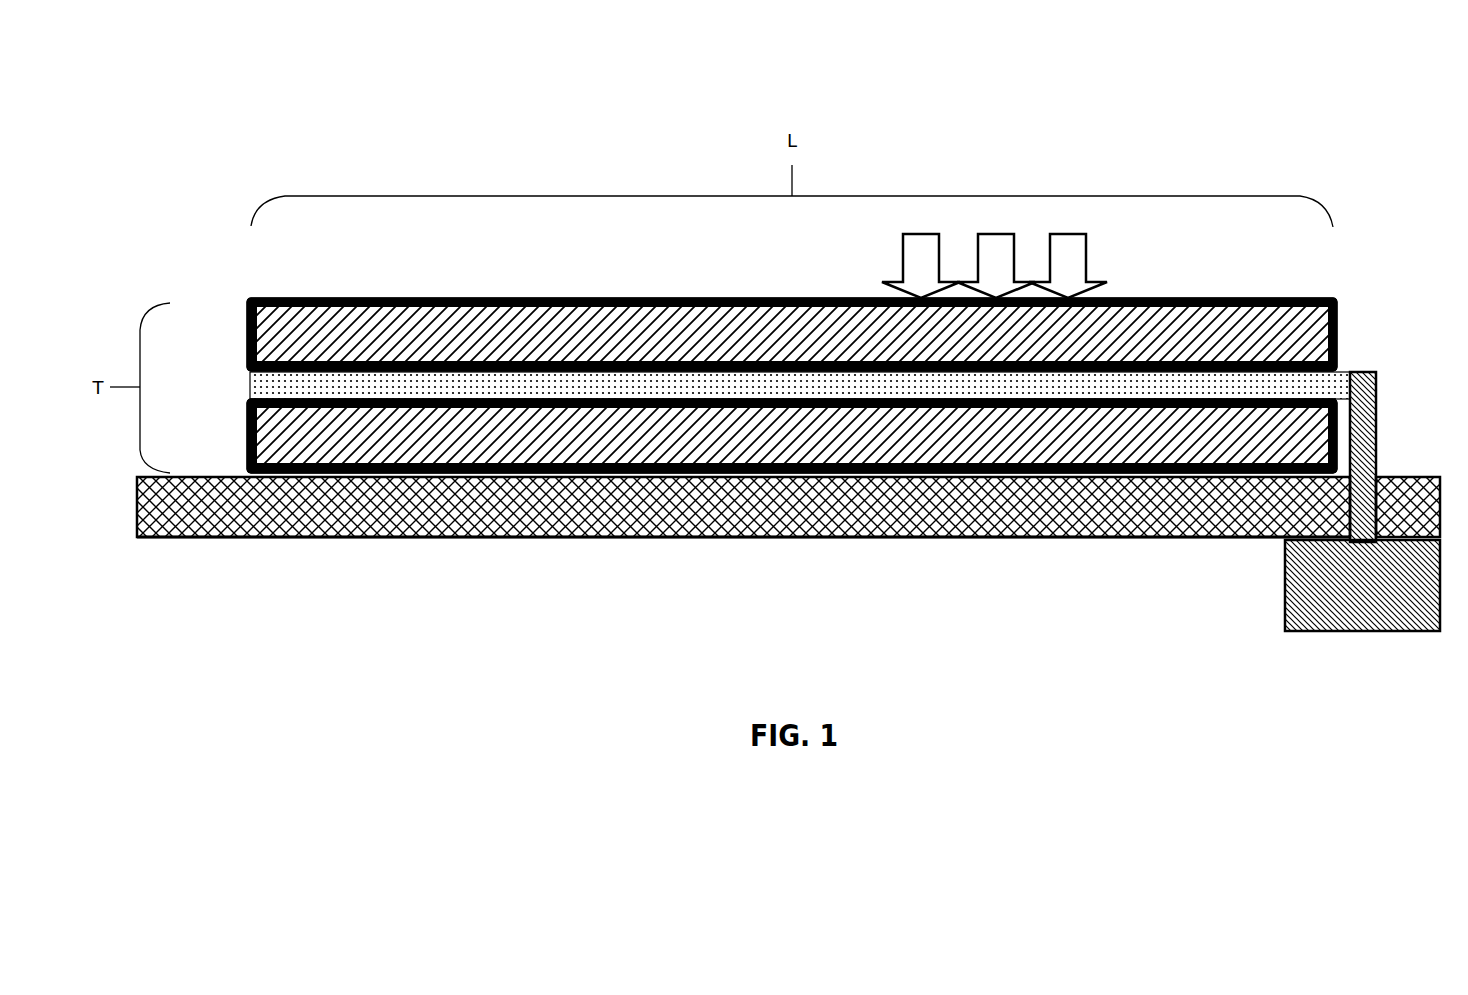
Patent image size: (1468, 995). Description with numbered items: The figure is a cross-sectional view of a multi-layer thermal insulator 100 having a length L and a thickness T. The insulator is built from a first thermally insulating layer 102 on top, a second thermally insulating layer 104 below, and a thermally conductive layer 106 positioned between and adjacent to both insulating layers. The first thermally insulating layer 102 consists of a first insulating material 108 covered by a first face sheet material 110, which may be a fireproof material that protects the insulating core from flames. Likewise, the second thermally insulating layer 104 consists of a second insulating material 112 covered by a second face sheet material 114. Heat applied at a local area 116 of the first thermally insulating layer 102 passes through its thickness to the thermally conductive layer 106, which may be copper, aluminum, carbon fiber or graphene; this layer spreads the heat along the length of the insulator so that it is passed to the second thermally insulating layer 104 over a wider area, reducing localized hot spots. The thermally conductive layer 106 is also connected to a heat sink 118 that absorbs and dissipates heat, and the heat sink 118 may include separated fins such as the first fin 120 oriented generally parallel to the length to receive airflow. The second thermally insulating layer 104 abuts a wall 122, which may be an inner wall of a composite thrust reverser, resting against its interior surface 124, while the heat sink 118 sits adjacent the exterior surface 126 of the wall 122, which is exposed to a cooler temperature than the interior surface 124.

The multi-layer thermal insulator 100 is at (1090, 96).
The first thermally insulating layer 102 is at (759, 302).
The second thermally insulating layer 104 is at (759, 502).
The thermally conductive layer 106 is at (250, 383).
The first insulating material 108 is at (555, 340).
The first face sheet material 110 is at (448, 298).
The second insulating material 112 is at (568, 450).
The second face sheet material 114 is at (470, 475).
The local area 116 is at (1088, 265).
The heat sink 118 is at (1285, 573).
The first fin 120 is at (1365, 632).
The wall 122 is at (693, 537).
The interior surface 124 is at (765, 478).
The exterior surface 126 is at (820, 537).